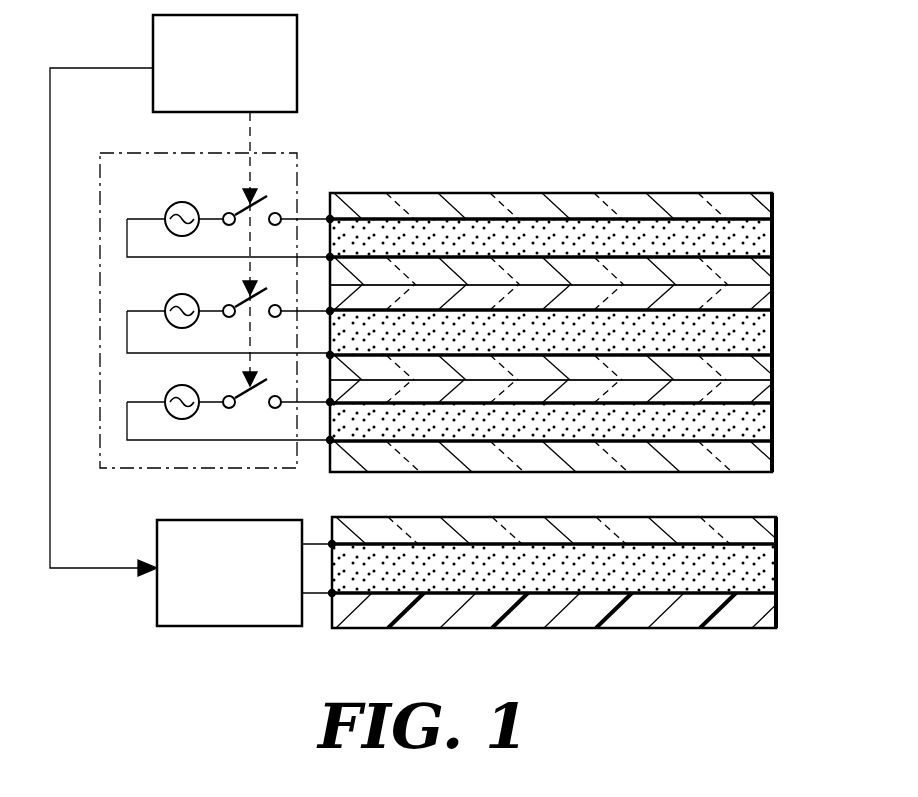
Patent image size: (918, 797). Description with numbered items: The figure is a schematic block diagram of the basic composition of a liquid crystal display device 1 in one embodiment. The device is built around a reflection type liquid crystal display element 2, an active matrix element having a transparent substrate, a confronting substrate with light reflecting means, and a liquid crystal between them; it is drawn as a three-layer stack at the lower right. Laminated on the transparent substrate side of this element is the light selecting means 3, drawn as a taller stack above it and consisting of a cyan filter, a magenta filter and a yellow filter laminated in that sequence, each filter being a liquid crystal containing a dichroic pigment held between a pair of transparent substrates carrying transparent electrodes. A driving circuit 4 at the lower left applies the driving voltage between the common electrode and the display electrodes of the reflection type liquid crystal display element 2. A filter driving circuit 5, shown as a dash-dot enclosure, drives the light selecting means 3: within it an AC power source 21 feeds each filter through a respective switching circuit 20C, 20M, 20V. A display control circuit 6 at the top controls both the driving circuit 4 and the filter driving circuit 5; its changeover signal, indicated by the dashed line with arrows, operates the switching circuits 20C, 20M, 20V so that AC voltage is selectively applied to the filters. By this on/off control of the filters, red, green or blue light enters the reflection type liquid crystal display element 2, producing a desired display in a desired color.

The liquid crystal display device 1 is at (118, 618).
The reflection type liquid crystal display element 2 is at (597, 574).
The light selecting means 3 is at (620, 332).
The driving circuit 4 is at (204, 626).
The filter driving circuit 5 is at (148, 468).
The display control circuit 6 is at (298, 50).
The switching circuit 20C is at (239, 203).
The switching circuit 20M is at (244, 295).
The switching circuit 20V is at (242, 386).
The AC power source 21 is at (168, 203).